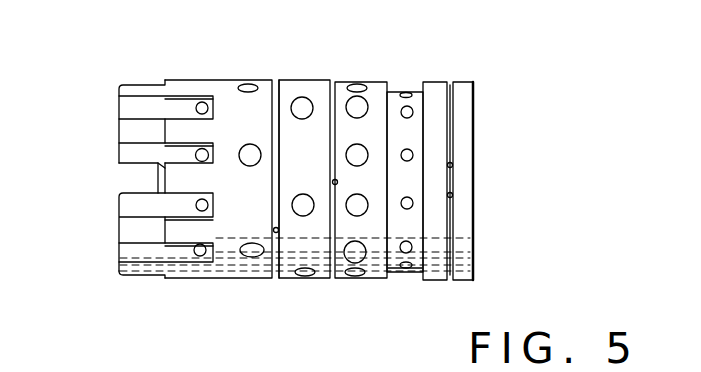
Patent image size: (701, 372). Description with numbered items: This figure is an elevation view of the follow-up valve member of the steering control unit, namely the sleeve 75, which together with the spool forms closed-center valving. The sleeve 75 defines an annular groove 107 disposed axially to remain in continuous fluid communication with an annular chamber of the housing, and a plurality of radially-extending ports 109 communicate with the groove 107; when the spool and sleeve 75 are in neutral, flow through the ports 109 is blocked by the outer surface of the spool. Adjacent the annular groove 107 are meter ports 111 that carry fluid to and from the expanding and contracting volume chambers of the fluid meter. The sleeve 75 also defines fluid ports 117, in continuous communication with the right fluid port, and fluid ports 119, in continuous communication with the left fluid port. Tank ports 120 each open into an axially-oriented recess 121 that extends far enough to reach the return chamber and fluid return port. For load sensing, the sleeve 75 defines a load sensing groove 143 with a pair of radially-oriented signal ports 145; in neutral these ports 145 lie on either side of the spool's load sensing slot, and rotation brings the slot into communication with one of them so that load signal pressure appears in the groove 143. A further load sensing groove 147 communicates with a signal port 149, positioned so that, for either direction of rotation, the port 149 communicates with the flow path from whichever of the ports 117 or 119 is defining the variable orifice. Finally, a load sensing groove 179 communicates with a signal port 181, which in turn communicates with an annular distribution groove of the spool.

The sleeve 75 is at (289, 166).
The annular groove 107 is at (390, 89).
The radially-extending ports 109 is at (413, 157).
The meter ports 111 is at (357, 85).
The fluid ports 117 is at (302, 99).
The fluid ports 119 is at (250, 86).
The tank ports 120 is at (199, 105).
The axially-oriented recess 121 is at (141, 110).
The load sensing groove 143 is at (451, 113).
The signal ports 145 is at (453, 165).
The load sensing groove 147 is at (274, 82).
The signal port 149 is at (278, 231).
The load sensing groove 179 is at (352, 270).
The signal port 181 is at (338, 181).